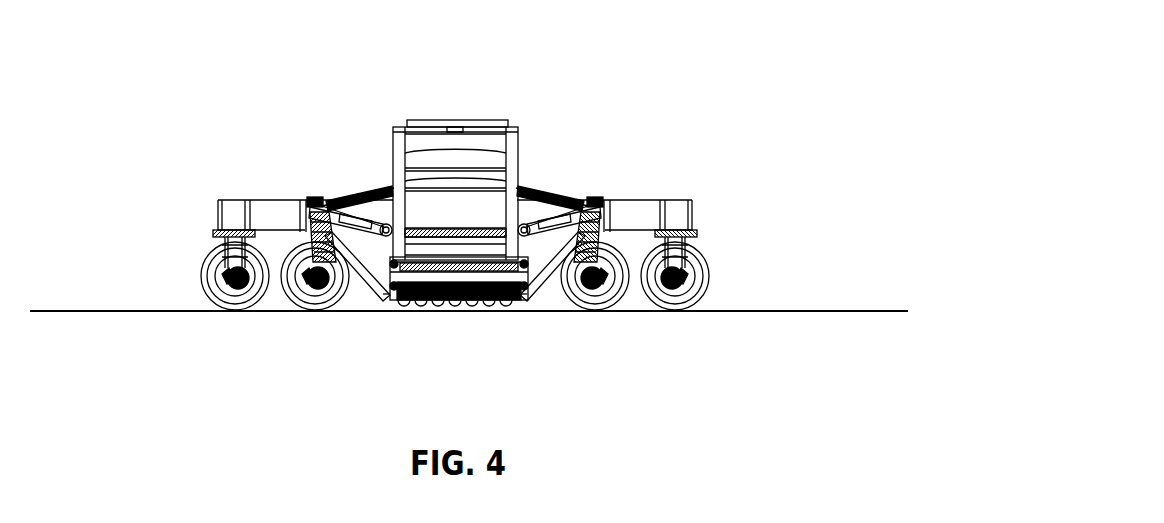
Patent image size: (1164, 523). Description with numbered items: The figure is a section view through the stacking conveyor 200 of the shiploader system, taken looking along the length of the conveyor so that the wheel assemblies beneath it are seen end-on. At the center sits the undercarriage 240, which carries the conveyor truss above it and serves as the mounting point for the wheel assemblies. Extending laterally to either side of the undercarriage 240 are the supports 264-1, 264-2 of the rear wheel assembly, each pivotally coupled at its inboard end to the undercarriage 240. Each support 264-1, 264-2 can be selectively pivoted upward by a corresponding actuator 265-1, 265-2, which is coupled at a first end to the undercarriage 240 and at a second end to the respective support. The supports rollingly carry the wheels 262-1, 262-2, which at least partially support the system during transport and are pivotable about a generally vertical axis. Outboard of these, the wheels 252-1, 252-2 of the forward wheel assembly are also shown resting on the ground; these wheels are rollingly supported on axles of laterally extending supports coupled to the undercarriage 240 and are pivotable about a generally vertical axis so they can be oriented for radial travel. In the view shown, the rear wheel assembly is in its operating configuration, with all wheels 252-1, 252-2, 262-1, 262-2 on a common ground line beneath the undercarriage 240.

The stacking conveyor 200 is at (974, 241).
The undercarriage 240 is at (434, 120).
The wheel 252-1 is at (207, 255).
The wheel 252-2 is at (700, 258).
The wheel 262-1 is at (290, 245).
The wheel 262-2 is at (614, 230).
The support 264-1 is at (372, 192).
The support 264-2 is at (565, 192).
The actuator 265-1 is at (378, 193).
The actuator 265-2 is at (542, 195).